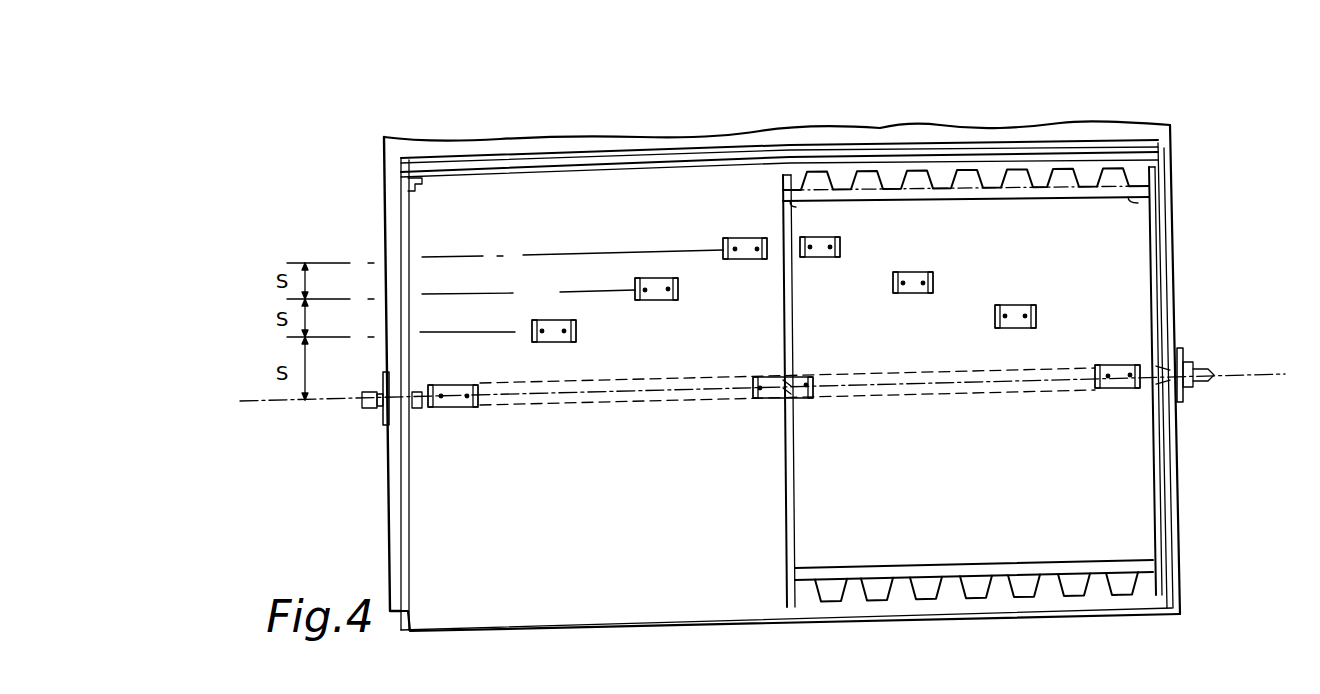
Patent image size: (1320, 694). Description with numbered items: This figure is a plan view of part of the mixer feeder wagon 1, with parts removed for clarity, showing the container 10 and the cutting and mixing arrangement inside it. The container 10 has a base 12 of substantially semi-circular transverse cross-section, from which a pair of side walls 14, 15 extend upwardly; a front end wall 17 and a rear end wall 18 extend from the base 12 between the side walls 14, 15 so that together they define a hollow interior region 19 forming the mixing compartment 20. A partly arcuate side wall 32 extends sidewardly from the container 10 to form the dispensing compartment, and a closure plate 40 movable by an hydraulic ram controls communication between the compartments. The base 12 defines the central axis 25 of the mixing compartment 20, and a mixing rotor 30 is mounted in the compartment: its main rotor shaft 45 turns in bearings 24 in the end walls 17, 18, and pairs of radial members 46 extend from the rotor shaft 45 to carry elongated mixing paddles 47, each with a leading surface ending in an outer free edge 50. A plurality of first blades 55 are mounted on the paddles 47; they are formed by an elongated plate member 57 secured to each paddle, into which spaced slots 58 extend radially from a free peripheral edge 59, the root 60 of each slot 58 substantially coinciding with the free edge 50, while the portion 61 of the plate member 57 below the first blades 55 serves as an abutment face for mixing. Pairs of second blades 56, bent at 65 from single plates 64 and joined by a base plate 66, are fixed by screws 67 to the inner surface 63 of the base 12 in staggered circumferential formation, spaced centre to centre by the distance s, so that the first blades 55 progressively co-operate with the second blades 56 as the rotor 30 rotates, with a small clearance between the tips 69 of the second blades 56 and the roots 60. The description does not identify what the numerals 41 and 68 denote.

The mixer feeder wagon 1 is at (322, 104).
The container 10 is at (545, 632).
The base 12 is at (590, 620).
The side wall 14 is at (533, 158).
The side wall 15 is at (720, 620).
The front end wall 17 is at (1178, 502).
The rear end wall 18 is at (408, 478).
The hollow interior region 19 is at (468, 628).
The mixing compartment 20 is at (432, 540).
The bearings 24 is at (380, 380).
The central axis 25 is at (666, 398).
The mixing rotor 30 is at (797, 514).
The side wall 32 is at (612, 140).
The closure plate 40 is at (560, 180).
The frame element 41 is at (1292, 688).
The main rotor shaft 45 is at (767, 400).
The radial members 46 is at (1157, 246).
The mixing paddles 47 is at (882, 572).
The outer free edge 50 is at (995, 598).
The first blades 55 is at (917, 178).
The second blades 56 is at (432, 408).
The plate member 57 is at (838, 594).
The slots 58 is at (883, 173).
The free peripheral edge 59 is at (815, 186).
The root 60 is at (1005, 572).
The portion 61 is at (1128, 212).
The inner surface 63 is at (656, 620).
The single plates 64 is at (455, 385).
The bend 65 is at (442, 385).
The base plate 66 is at (455, 407).
The screws 67 is at (467, 384).
The fastener 68 is at (532, 331).
The tips 69 is at (533, 322).